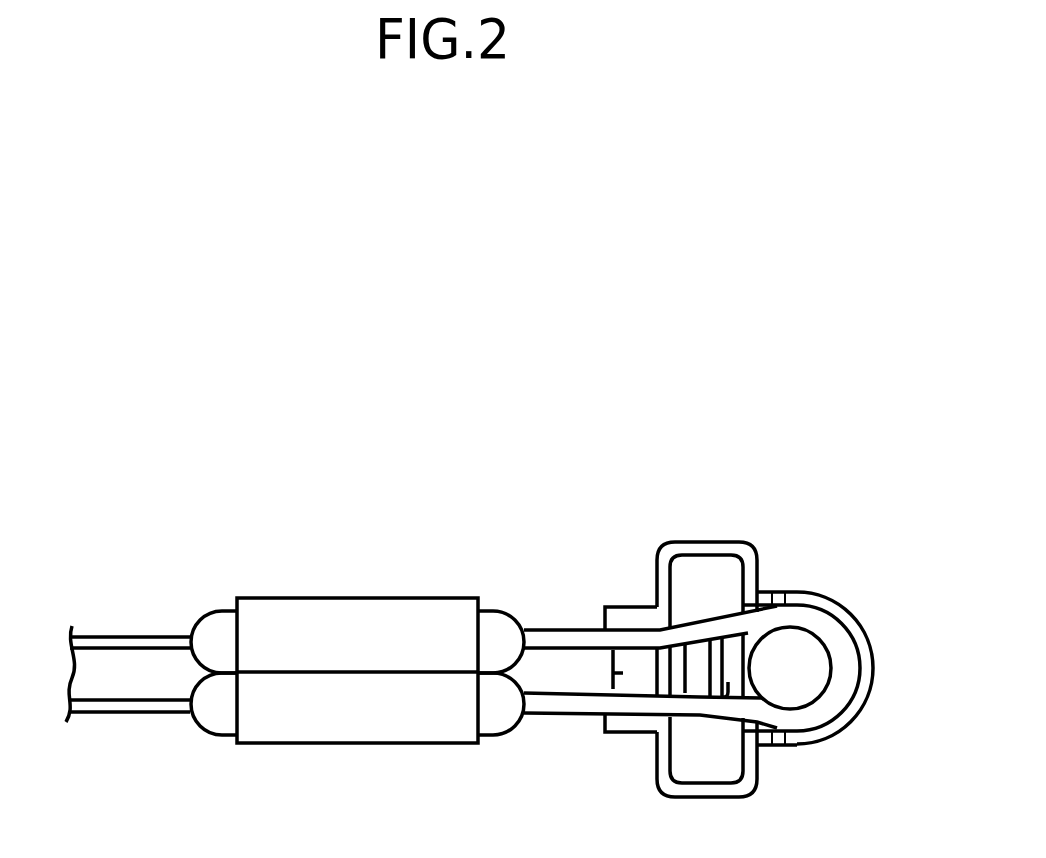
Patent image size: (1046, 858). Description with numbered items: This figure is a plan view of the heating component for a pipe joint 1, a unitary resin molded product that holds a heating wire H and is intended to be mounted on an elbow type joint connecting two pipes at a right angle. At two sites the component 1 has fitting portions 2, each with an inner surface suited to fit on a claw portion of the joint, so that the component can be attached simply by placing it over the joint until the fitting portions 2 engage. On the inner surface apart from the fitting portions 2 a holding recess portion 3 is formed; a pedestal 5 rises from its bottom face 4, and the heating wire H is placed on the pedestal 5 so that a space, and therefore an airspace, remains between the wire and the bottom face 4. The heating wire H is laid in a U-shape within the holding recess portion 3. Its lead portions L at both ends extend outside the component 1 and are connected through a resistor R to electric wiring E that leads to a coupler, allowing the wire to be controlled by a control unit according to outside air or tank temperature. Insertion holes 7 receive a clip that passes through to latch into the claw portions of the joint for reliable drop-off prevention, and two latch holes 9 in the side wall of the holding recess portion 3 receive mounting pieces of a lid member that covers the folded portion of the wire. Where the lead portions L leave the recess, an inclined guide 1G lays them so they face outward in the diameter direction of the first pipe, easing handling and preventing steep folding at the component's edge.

The electric wiring E is at (125, 708).
The resistor R is at (343, 693).
The lead portions L is at (565, 630).
The heating component for a pipe joint 1 is at (870, 633).
The inclined guide 1G is at (613, 675).
The fitting portions 2 is at (695, 545).
The holding recess portion 3 is at (846, 670).
The bottom face 4 is at (695, 680).
The pedestal 5 is at (686, 645).
The insertion holes 7 is at (646, 596).
The latch holes 9 is at (788, 582).
The heating wire H is at (837, 608).